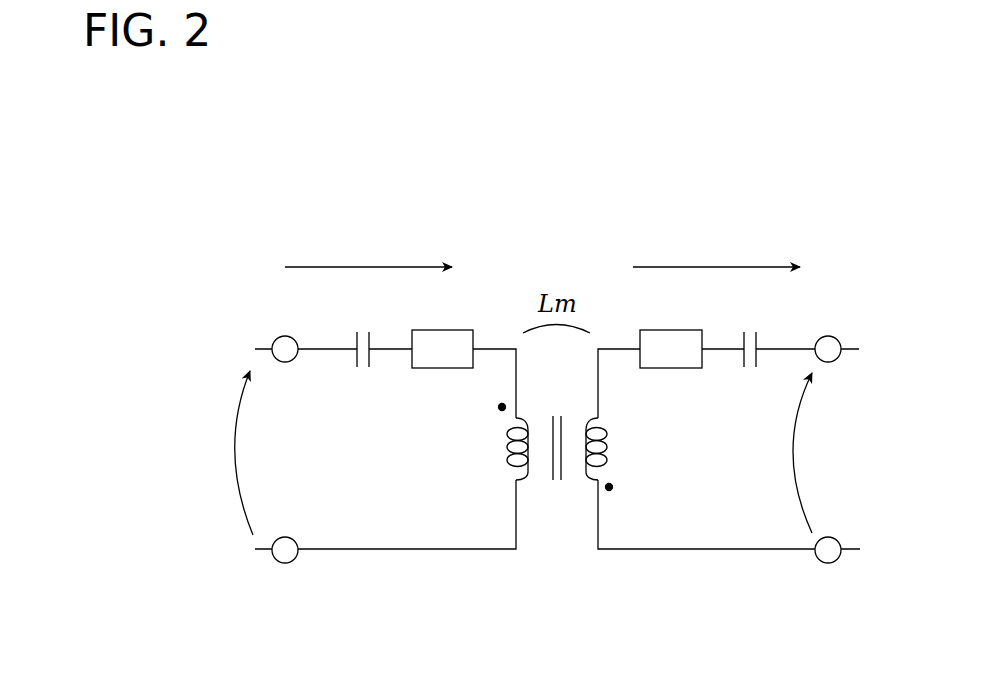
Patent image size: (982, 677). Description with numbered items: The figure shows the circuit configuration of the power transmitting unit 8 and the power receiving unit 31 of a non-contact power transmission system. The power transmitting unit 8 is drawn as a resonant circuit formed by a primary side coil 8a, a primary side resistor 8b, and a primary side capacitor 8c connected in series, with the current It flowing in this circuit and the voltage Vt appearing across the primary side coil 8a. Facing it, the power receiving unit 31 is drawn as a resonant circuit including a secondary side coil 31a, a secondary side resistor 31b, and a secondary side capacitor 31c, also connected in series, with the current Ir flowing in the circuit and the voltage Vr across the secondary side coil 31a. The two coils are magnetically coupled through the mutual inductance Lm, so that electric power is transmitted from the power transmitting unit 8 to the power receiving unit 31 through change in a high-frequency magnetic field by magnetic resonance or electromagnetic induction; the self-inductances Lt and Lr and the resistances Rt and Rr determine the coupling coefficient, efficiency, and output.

The power transmitting unit 8 is at (229, 248).
The primary side coil 8a is at (517, 480).
The primary side resistor 8b is at (468, 329).
The primary side capacitor 8c is at (355, 339).
The power receiving unit 31 is at (825, 240).
The secondary side coil 31a is at (597, 480).
The secondary side resistor 31b is at (643, 330).
The secondary side capacitor 31c is at (757, 342).